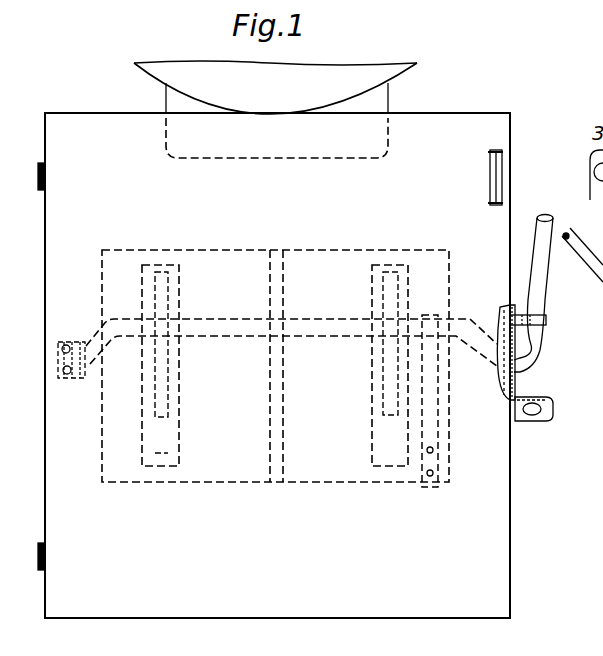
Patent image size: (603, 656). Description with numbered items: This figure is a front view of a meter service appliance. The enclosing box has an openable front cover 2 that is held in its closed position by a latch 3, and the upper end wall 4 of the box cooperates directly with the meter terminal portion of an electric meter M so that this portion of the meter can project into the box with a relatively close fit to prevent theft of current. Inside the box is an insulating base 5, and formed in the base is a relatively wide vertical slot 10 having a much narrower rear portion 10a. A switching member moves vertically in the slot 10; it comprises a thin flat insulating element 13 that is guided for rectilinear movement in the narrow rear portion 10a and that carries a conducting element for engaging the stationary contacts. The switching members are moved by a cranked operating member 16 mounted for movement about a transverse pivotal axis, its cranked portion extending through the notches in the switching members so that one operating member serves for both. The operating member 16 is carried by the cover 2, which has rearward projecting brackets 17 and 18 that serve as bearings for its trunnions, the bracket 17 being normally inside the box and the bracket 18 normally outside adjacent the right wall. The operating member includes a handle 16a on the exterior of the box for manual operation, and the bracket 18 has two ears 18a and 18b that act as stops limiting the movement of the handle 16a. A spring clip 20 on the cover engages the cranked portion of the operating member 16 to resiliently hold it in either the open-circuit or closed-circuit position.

The openable front cover 2 is at (510, 515).
The latch 3 is at (490, 173).
The upper end wall 4 is at (398, 208).
The insulating base 5 is at (336, 236).
The vertical slot 10 is at (180, 425).
The narrower rear portion of the slot 10a is at (168, 453).
The insulating element 13 is at (168, 380).
The cranked operating member 16 is at (315, 328).
The handle 16a is at (545, 214).
The bracket 17 is at (78, 380).
The bracket 18 is at (500, 392).
The ear 18a is at (568, 306).
The ear 18b is at (554, 413).
The spring clip 20 is at (436, 420).
The electric meter M is at (281, 94).